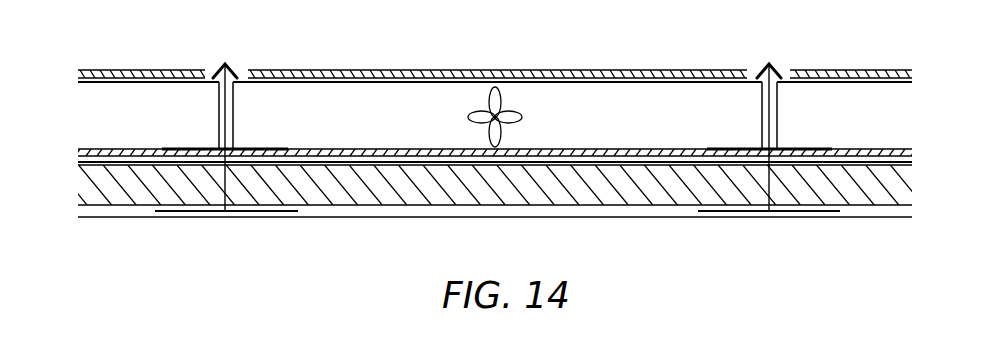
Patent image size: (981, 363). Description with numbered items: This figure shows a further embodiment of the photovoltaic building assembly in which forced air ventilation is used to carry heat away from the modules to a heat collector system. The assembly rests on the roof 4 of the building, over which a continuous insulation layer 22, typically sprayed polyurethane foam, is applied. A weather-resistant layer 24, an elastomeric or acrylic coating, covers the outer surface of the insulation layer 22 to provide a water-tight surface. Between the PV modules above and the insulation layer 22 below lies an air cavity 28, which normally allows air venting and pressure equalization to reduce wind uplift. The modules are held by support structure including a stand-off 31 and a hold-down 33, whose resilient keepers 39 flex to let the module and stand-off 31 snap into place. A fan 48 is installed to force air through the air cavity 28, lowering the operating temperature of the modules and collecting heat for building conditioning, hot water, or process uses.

The roof 4 is at (540, 218).
The insulation layer 22 is at (612, 190).
The weather-resistant layer 24 is at (875, 148).
The air cavity 28 is at (331, 123).
The stand-off 31 is at (761, 118).
The hold-down 33 is at (781, 118).
The keepers 39 is at (220, 63).
The fan 48 is at (521, 117).